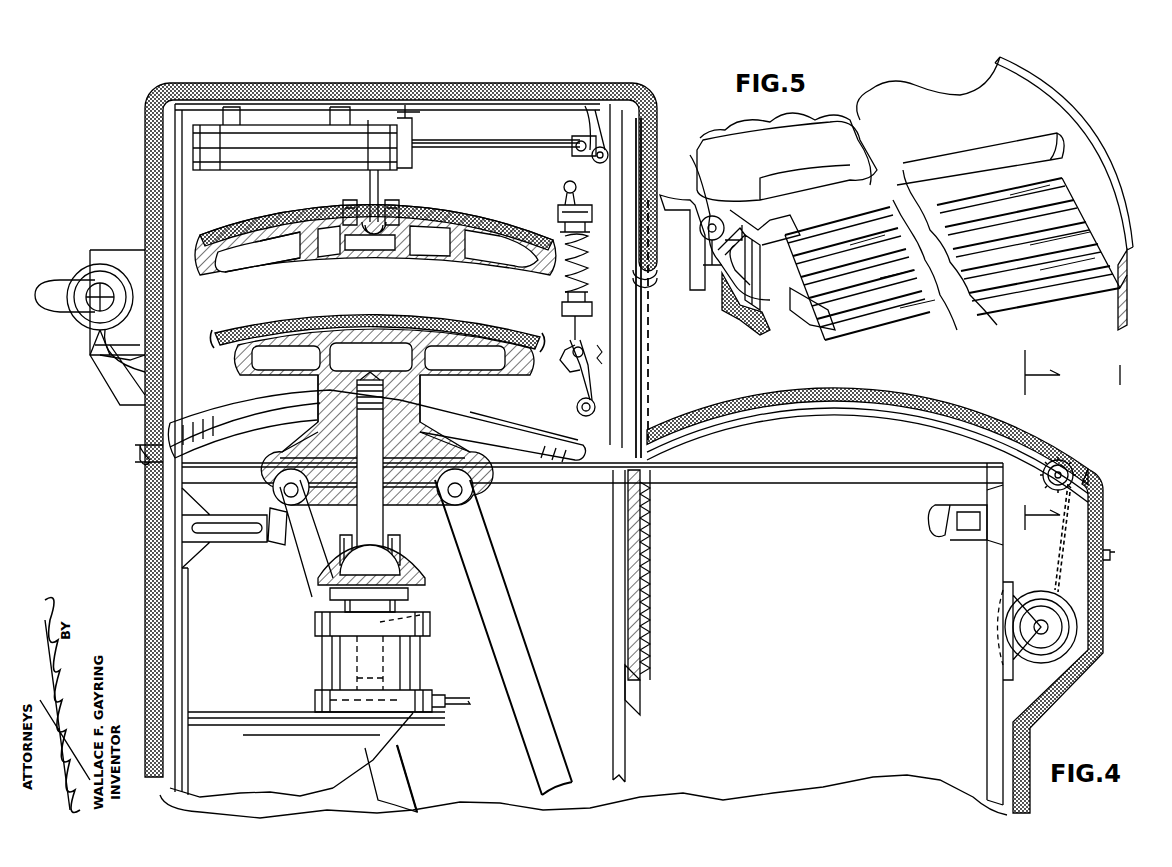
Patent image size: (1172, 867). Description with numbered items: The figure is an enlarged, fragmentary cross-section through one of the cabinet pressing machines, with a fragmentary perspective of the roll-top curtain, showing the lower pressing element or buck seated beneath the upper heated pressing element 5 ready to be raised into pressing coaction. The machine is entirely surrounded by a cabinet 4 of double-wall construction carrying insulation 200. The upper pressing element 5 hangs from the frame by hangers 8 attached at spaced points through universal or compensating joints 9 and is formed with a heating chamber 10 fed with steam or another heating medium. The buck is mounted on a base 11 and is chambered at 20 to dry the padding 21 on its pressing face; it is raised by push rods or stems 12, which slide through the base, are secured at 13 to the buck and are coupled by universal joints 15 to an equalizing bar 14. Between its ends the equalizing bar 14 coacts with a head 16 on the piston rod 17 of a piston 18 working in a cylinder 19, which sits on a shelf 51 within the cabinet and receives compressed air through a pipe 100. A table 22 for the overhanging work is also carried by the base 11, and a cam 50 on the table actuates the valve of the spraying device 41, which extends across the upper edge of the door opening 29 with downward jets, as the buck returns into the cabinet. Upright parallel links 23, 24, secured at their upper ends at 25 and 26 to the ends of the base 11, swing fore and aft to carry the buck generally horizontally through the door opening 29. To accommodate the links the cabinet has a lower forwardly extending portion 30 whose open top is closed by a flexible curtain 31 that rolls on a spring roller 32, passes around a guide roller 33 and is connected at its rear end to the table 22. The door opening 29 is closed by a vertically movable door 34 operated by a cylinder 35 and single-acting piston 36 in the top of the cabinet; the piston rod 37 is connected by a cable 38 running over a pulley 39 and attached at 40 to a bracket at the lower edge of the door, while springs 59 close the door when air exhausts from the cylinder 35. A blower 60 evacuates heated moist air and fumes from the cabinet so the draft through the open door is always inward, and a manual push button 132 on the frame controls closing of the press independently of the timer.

In FIG. 4, the cabinet 4 is at (145, 500).
In FIG. 4, the insulation 200 is at (145, 575).
In FIG. 4, the blower 60 is at (95, 265).
In FIG. 4, the cylinder 35 is at (262, 157).
In FIG. 4, the piston 36 is at (415, 128).
In FIG. 4, the piston rod 37 is at (462, 147).
In FIG. 4, the pulley 39 is at (585, 135).
In FIG. 4, the hangers 8 is at (378, 172).
In FIG. 4, the universal or compensating joints 9 is at (365, 215).
In FIG. 4, the upper pressing element 5 is at (375, 250).
In FIG. 4, the heating chamber 10 is at (300, 258).
In FIG. 4, the heating chamber 20 is at (370, 415).
In FIG. 4, the padding 21 is at (218, 340).
In FIG. 4, the base 11 is at (295, 460).
In FIG. 4, the upper pivot of link 25 is at (310, 492).
In FIG. 4, the upper pivot of link 26 is at (440, 495).
In FIG. 4, the securing point 13 is at (405, 398).
In FIG. 4, the push rods or stems 12 is at (385, 530).
In FIG. 4, the universal joints 15 is at (402, 552).
In FIG. 4, the equalizing bar 14 is at (418, 580).
In FIG. 4, the head 16 is at (330, 594).
In FIG. 4, the piston rod 17 is at (430, 626).
In FIG. 4, the cylinder 19 is at (335, 658).
In FIG. 4, the piston 18 is at (432, 690).
In FIG. 4, the pipe 100 is at (458, 706).
In FIG. 4, the shelf 51 is at (256, 730).
In FIG. 4, the link 23 is at (298, 573).
In FIG. 4, the link 24 is at (483, 526).
In FIG. 4, the springs 59 is at (651, 500).
In FIG. 4, the cam 50 is at (232, 410).
In FIG. 4, the table 22 is at (528, 432).
In FIG. 5, the table 22 is at (982, 92).
In FIG. 4, the cable 38 is at (612, 180).
In FIG. 4, the cable connection 40 is at (620, 433).
In FIG. 4, the door opening 29 is at (645, 295).
In FIG. 4, the door 34 is at (650, 345).
In FIG. 4, the spraying device 41 is at (688, 180).
In FIG. 4, the flexible curtain 31 is at (868, 395).
In FIG. 5, the flexible curtain 31 is at (872, 335).
In FIG. 4, the guide roller 33 is at (1065, 460).
In FIG. 4, the push button 132 is at (1118, 532).
In FIG. 4, the spring roller 32 is at (1043, 593).
In FIG. 4, the lower forwardly extending portion 30 is at (990, 622).